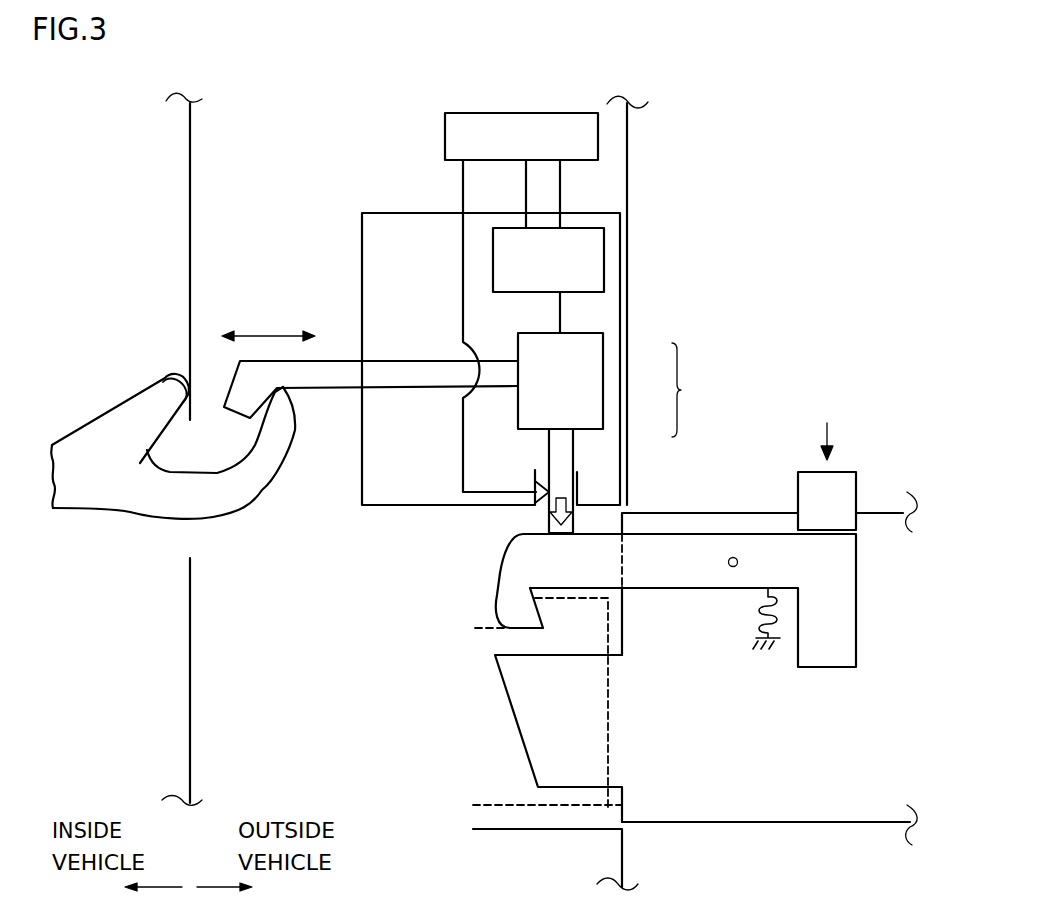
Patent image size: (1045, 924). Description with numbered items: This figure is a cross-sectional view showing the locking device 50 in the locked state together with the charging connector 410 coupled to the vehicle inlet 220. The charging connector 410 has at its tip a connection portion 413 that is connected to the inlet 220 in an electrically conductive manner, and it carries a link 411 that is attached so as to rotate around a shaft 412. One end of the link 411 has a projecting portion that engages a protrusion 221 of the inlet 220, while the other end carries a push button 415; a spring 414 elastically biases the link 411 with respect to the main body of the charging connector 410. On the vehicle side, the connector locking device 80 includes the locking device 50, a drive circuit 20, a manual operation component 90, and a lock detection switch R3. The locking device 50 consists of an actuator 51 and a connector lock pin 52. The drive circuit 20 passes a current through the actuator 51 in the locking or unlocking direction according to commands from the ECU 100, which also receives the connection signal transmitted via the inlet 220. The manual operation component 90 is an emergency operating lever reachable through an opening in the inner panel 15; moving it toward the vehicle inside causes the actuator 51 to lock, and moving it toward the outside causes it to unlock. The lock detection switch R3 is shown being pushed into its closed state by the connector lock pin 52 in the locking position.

The inner panel 15 is at (193, 127).
The ECU 100 is at (524, 112).
The connector locking device 80 is at (385, 212).
The drive circuit 20 is at (585, 227).
The manual operation component 90 is at (332, 360).
The actuator 51 is at (603, 360).
The connector lock pin 52 is at (573, 442).
The locking device 50 is at (693, 390).
The lock detection switch R3 is at (545, 503).
The push button 415 is at (845, 470).
The shaft 412 is at (733, 557).
The link 411 is at (498, 580).
The spring 414 is at (760, 617).
The protrusion 221 is at (550, 610).
The connection portion 413 is at (518, 735).
The inlet 220 is at (528, 807).
The charging connector 410 is at (834, 842).